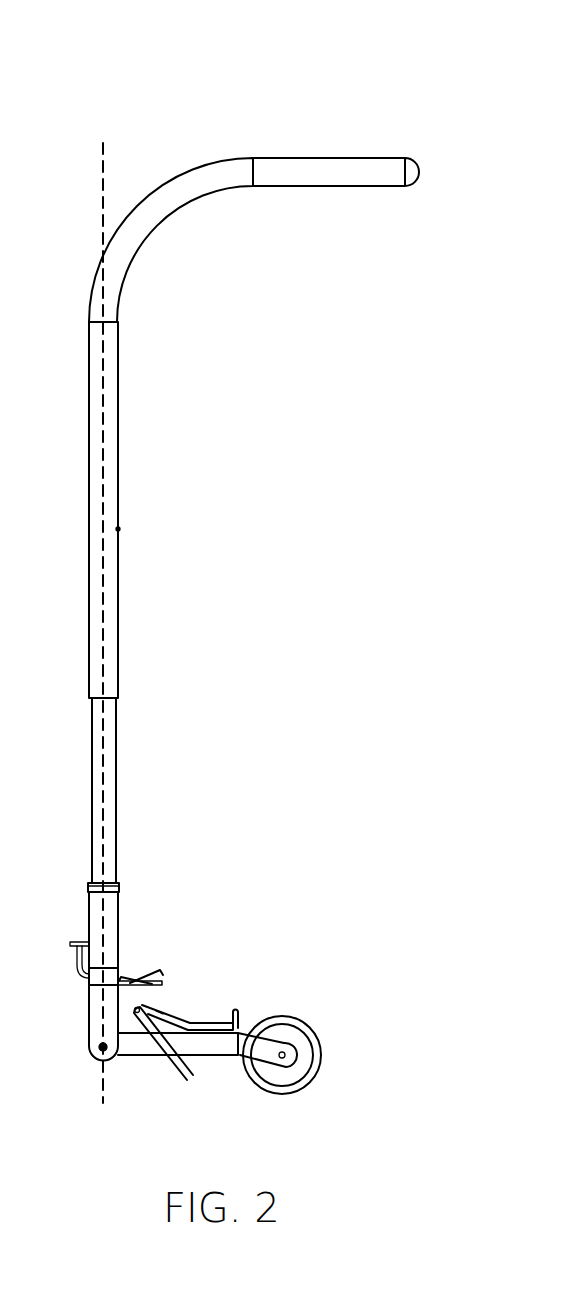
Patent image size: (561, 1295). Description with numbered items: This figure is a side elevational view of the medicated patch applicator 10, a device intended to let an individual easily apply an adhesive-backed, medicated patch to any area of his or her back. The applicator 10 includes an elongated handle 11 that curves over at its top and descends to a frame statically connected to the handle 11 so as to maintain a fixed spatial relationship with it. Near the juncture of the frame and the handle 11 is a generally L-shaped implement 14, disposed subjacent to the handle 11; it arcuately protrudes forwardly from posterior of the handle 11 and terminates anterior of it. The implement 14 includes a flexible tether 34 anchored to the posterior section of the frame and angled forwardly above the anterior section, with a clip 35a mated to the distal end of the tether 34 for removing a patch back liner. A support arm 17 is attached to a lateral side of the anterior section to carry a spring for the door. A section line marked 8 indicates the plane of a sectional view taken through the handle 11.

The medicated patch applicator 10 is at (282, 96).
The handle 11 is at (103, 442).
The L-shaped implement 14 is at (152, 940).
The support arm 17 is at (182, 1068).
The flexible tether 34 is at (87, 977).
The clip 35a is at (157, 978).
The section line 8 is at (103, 143).